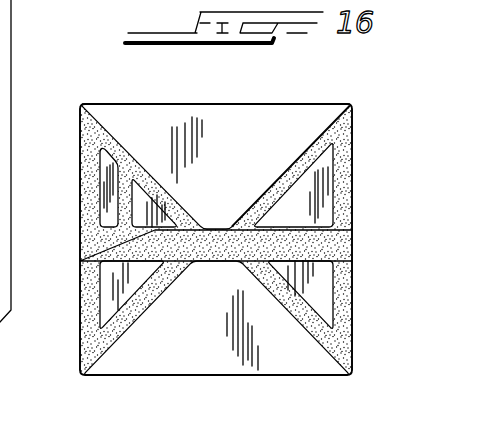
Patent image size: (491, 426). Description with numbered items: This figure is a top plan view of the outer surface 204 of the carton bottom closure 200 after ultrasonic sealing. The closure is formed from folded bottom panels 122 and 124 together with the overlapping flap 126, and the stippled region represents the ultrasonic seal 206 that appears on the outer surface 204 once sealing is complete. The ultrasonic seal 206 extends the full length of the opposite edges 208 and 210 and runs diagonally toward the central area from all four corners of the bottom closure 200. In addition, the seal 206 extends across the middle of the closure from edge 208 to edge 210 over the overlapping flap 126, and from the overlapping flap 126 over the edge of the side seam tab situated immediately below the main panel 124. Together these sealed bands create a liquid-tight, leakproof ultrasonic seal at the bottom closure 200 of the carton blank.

The bottom closure 200 is at (246, 92).
The outer surface 204 is at (151, 132).
The bottom panel 124 is at (315, 115).
The ultrasonic seal 206 is at (343, 128).
The edge 208 is at (385, 163).
The overlapping flap 126 is at (330, 245).
The bottom panel 122 is at (303, 360).
The edge 210 is at (80, 185).